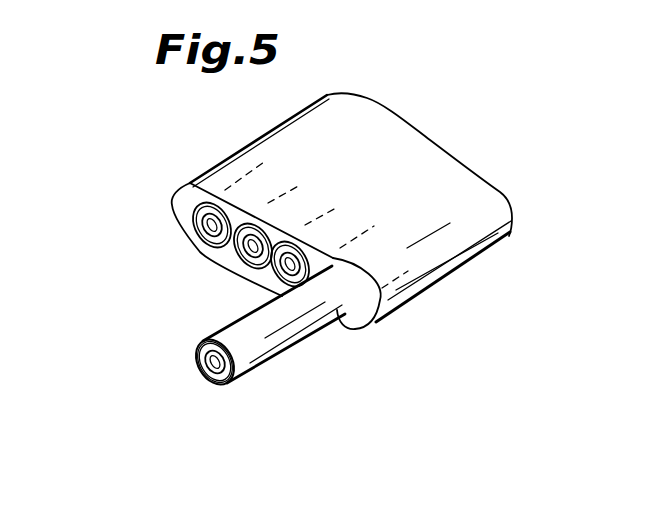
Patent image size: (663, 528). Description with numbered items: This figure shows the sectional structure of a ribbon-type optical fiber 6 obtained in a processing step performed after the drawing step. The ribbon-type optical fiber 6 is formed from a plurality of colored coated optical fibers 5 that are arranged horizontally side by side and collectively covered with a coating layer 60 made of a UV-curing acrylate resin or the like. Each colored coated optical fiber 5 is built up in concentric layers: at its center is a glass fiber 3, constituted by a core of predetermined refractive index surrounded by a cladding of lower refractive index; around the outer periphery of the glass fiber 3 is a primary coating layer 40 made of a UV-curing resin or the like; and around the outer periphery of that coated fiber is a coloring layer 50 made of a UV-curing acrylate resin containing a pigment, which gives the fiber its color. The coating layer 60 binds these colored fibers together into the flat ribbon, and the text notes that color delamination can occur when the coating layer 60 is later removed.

The ribbon-type optical fiber 6 is at (427, 168).
The coating layer 60 is at (363, 318).
The colored coated optical fiber 5 is at (296, 358).
The glass fiber 3 is at (194, 355).
The primary coating layer 40 is at (210, 368).
The coloring layer 50 is at (220, 378).